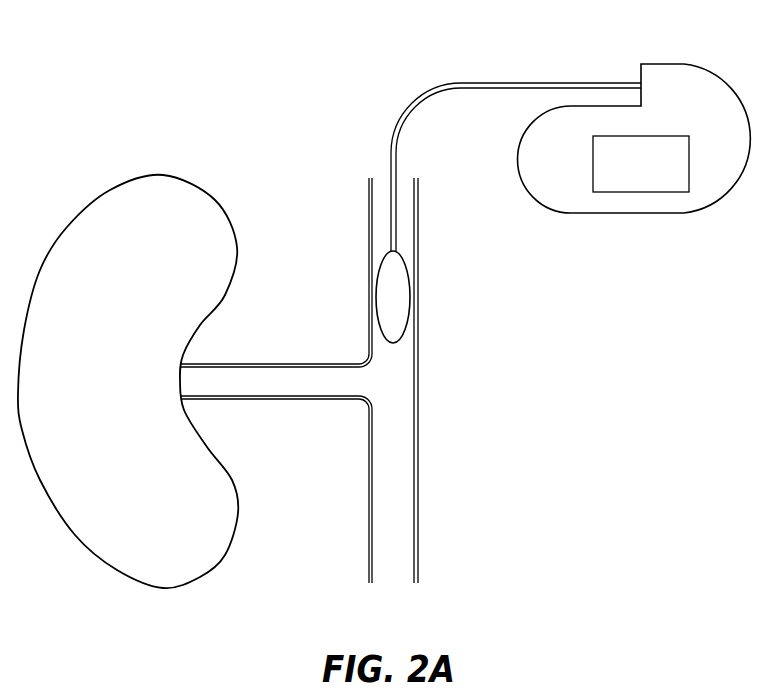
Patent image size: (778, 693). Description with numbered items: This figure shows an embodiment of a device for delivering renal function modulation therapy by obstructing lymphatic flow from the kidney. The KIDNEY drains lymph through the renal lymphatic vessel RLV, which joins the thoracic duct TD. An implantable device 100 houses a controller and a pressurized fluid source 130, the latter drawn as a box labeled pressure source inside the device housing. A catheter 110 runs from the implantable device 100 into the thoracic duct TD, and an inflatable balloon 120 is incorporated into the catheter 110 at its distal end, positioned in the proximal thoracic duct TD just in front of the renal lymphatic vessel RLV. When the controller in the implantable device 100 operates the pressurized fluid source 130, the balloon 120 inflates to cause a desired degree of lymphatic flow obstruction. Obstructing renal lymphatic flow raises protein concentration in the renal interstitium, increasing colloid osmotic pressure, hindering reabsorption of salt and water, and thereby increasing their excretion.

The implantable device 100 is at (687, 64).
The catheter 110 is at (553, 82).
The inflatable balloon 120 is at (400, 299).
The pressurized fluid source 130 is at (643, 136).
The thoracic duct TD is at (417, 380).
The renal lymphatic vessel RLV is at (270, 397).
The kidney KIDNEY is at (128, 381).